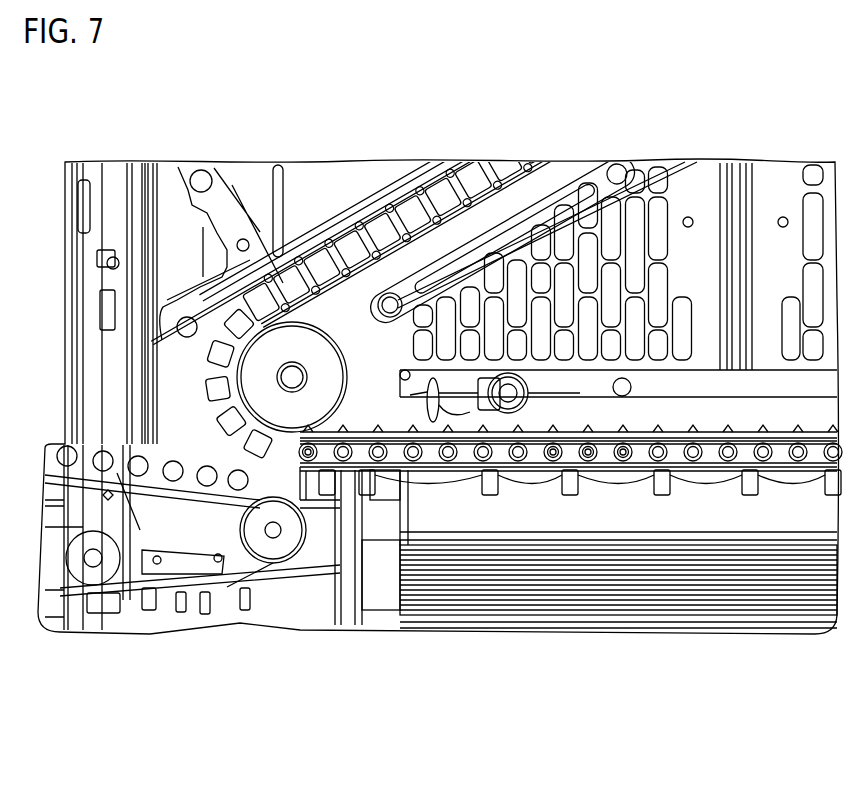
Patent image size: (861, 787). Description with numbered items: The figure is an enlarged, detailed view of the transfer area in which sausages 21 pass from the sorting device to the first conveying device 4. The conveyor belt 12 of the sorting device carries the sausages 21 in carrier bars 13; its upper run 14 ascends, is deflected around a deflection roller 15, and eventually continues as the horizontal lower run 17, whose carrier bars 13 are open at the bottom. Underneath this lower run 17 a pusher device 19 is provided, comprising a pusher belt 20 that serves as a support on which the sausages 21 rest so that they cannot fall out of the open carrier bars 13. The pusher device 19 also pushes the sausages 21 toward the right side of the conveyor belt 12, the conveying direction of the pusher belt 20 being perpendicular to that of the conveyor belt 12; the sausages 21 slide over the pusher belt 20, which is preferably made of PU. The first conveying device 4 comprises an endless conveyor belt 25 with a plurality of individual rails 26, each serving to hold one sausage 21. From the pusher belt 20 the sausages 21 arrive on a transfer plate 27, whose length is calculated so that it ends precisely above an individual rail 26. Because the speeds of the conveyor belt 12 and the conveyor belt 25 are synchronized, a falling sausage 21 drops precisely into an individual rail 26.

The first conveying device 4 is at (135, 628).
The conveyor belt 12 is at (477, 200).
The carrier bars 13 is at (385, 232).
The upper run 14 is at (410, 178).
The deflection roller 15 is at (341, 362).
The lower run 17 is at (391, 424).
The pusher device 19 is at (615, 488).
The pusher belt 20 is at (520, 475).
The sausages 21 is at (240, 482).
The endless conveyor belt 25 is at (148, 595).
The individual rails 26 is at (245, 592).
The transfer plate 27 is at (335, 463).